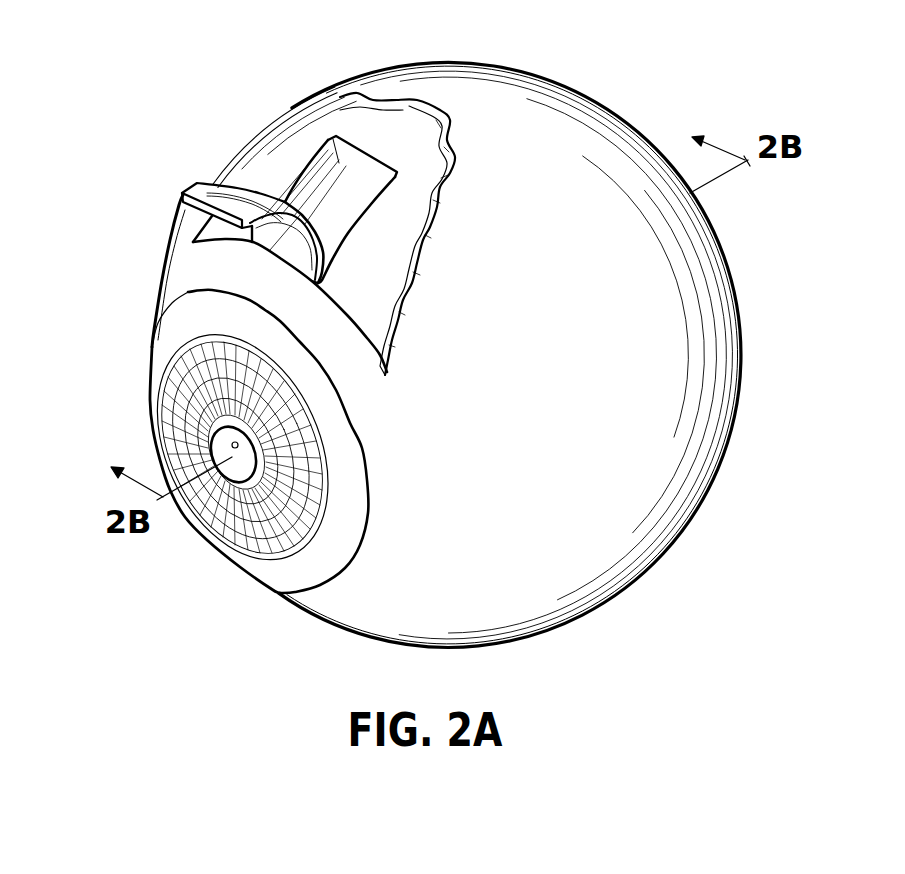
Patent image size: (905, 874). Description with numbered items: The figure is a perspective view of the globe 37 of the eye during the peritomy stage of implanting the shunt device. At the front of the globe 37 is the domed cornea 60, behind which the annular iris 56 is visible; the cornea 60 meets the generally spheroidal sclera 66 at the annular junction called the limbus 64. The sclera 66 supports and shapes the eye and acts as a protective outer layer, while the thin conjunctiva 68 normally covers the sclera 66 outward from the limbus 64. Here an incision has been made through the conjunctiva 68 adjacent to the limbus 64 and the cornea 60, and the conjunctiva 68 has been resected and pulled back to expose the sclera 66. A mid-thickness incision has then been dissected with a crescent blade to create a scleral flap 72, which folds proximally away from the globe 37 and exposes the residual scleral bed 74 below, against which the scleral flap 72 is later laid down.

The globe 37 is at (572, 87).
The iris 56 is at (217, 510).
The cornea 60 is at (152, 357).
The limbus 64 is at (182, 278).
The sclera 66 is at (273, 170).
The conjunctiva 68 is at (403, 107).
The scleral flap 72 is at (193, 187).
The residual scleral bed 74 is at (337, 163).